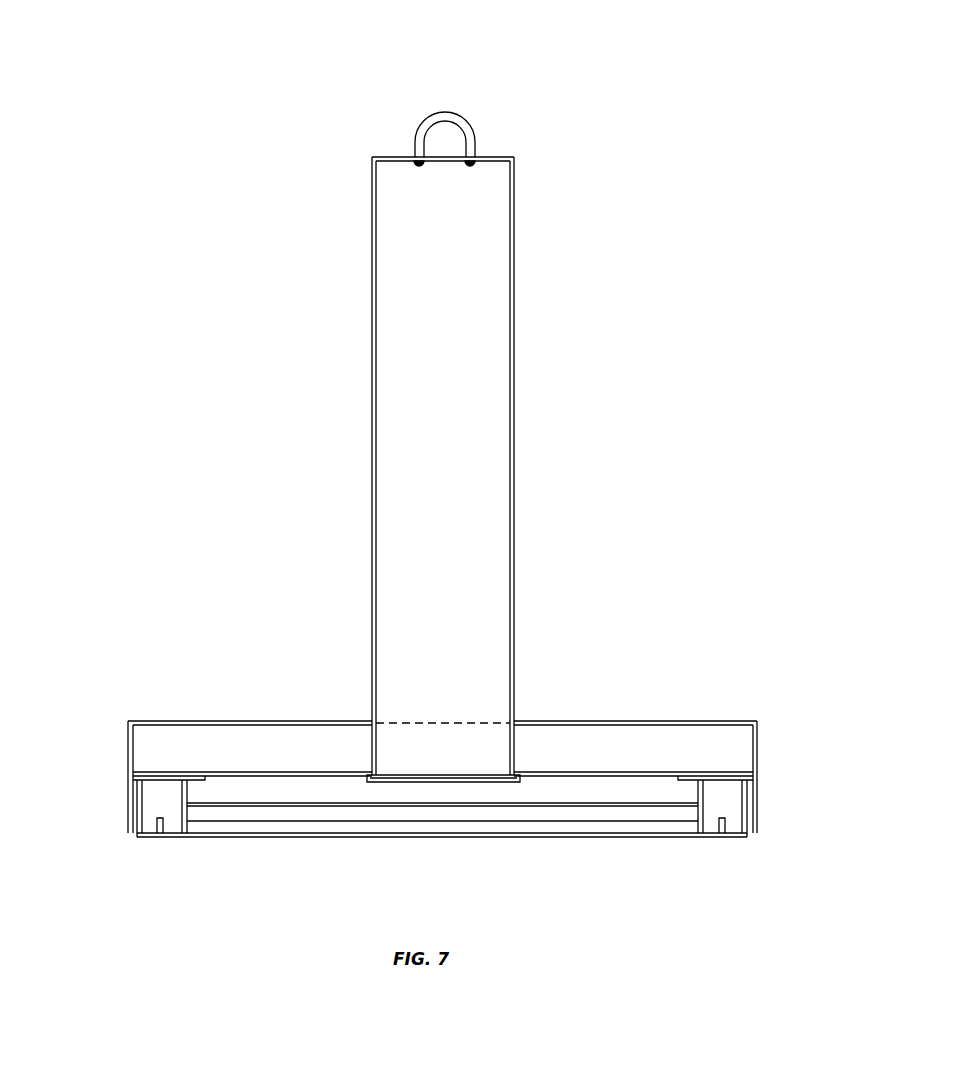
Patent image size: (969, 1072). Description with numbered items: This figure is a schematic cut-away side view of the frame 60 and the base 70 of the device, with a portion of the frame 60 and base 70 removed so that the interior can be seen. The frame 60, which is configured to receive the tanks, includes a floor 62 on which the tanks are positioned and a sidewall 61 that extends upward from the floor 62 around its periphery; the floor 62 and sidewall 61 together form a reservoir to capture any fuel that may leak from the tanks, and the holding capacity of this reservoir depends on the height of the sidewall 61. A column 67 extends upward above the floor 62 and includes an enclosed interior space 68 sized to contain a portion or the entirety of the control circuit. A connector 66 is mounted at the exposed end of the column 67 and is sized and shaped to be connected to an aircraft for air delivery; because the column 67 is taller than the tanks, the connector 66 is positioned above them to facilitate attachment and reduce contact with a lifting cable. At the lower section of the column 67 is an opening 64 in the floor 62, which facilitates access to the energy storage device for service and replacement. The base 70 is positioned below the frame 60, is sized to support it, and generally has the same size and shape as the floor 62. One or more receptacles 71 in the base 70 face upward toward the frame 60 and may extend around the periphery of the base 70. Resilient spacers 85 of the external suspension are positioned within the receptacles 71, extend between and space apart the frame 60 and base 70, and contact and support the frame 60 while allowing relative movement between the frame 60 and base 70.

The frame 60 is at (202, 553).
The sidewall 61 is at (128, 740).
The floor 62 is at (265, 778).
The opening 64 is at (408, 775).
The connector 66 is at (470, 130).
The column 67 is at (514, 378).
The enclosed interior space 68 is at (487, 187).
The base 70 is at (221, 837).
The receptacles 71 is at (137, 815).
The resilient spacers 85 is at (160, 790).